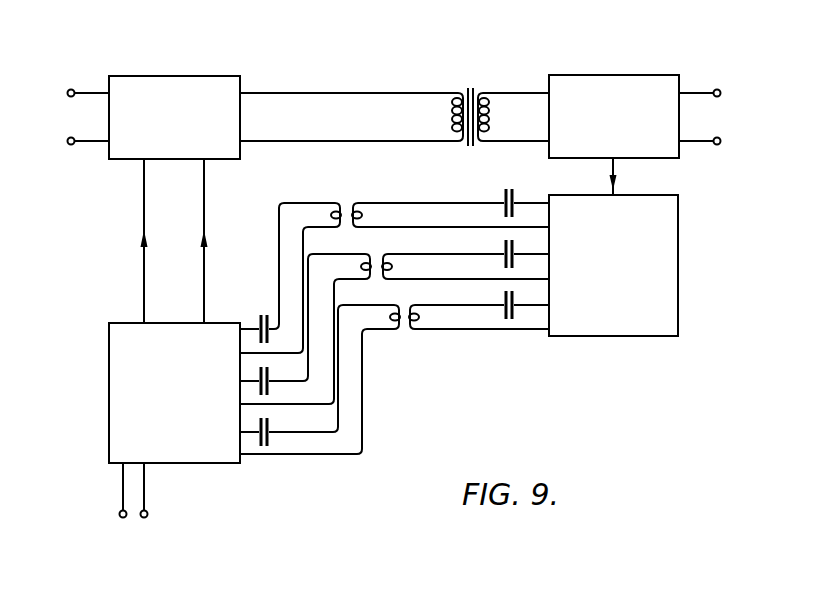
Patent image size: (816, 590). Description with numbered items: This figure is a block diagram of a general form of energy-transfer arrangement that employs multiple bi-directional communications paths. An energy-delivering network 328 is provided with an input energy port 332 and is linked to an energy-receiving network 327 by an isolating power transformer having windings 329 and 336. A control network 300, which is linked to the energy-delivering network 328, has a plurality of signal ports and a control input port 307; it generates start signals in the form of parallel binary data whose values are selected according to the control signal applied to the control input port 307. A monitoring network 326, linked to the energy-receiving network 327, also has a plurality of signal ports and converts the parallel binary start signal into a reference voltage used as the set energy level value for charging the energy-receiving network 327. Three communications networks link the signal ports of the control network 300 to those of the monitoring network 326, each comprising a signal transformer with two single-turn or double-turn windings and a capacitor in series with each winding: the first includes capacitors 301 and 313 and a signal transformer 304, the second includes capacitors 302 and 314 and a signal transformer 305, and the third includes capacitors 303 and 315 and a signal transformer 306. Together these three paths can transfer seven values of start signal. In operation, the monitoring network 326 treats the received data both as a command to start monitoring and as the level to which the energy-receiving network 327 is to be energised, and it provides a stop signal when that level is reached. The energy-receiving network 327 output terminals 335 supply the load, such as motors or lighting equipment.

The control network 300 is at (207, 463).
The capacitor 301 is at (263, 314).
The capacitor 302 is at (273, 371).
The capacitor 303 is at (273, 420).
The signal transformer 304 is at (345, 200).
The signal transformer 305 is at (373, 259).
The signal transformer 306 is at (405, 330).
The control input port 307 is at (132, 516).
The capacitor 313 is at (502, 189).
The capacitor 314 is at (502, 247).
The capacitor 315 is at (502, 298).
The monitoring network 326 is at (628, 338).
The energy-receiving network 327 is at (612, 75).
The energy-delivering network 328 is at (172, 75).
The winding 329 is at (394, 94).
The input energy port 332 is at (68, 118).
The output terminals 335 is at (718, 113).
The winding 336 is at (452, 112).